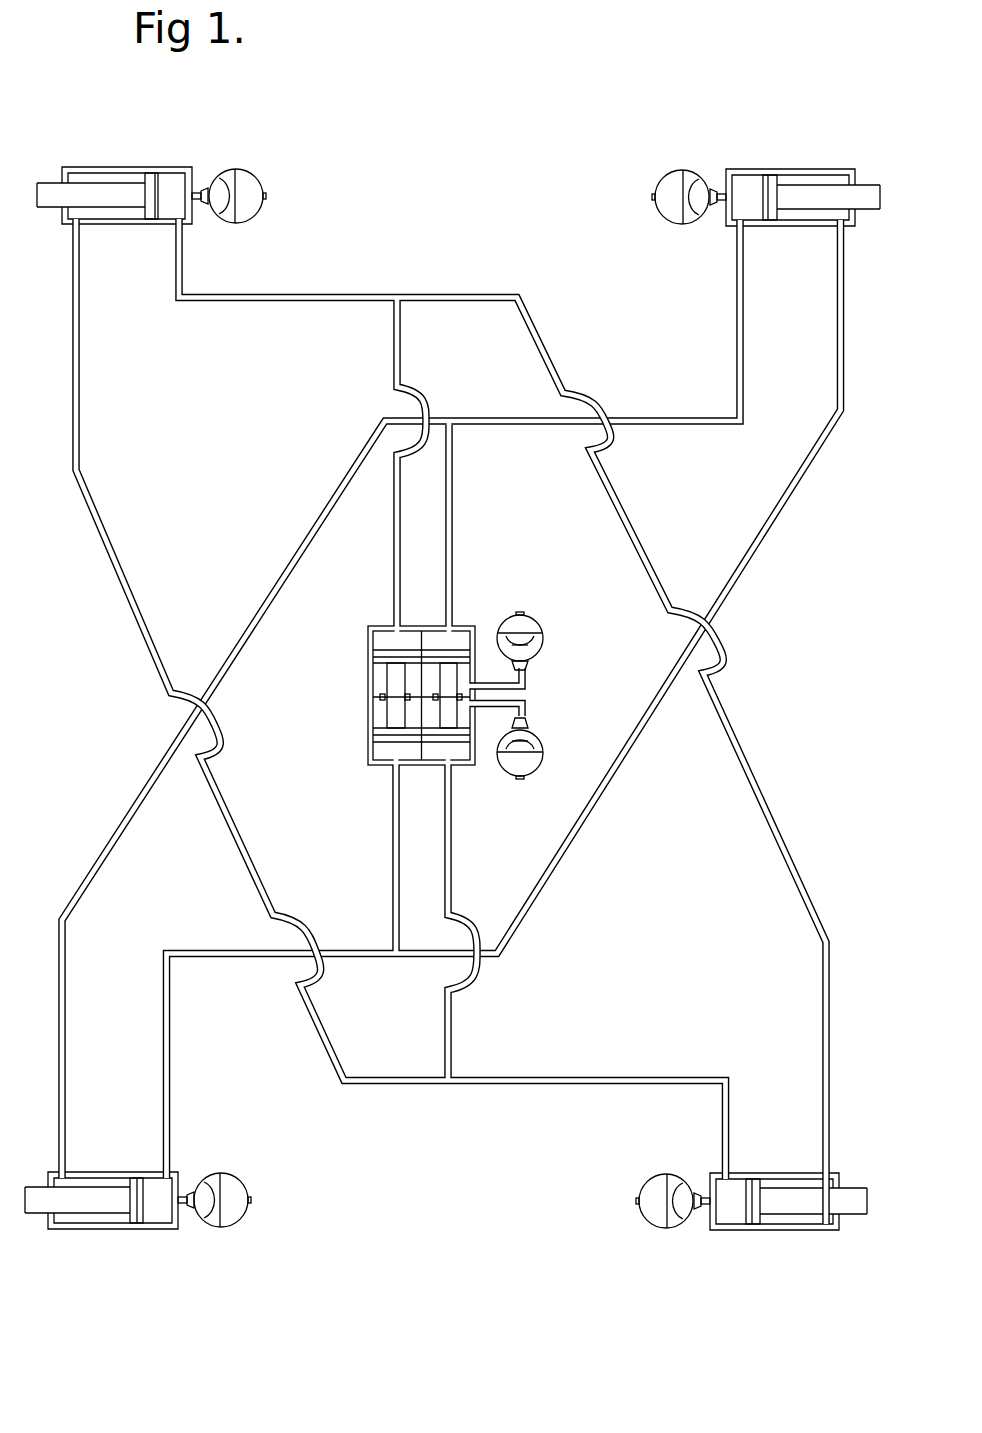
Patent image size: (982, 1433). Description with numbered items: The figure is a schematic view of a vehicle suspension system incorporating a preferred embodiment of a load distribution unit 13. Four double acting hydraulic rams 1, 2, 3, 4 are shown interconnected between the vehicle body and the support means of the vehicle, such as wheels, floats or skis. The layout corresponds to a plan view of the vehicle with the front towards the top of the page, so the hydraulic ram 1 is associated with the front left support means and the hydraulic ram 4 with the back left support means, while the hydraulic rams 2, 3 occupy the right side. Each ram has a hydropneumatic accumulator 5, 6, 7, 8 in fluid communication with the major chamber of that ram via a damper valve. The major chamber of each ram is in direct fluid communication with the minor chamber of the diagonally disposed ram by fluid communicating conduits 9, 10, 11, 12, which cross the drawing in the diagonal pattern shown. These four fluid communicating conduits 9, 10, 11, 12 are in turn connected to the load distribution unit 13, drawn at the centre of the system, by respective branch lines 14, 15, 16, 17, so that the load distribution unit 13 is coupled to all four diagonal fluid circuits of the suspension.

The hydraulic ram 1 is at (135, 167).
The hydraulic ram 2 is at (798, 169).
The hydraulic ram 3 is at (747, 1230).
The hydraulic ram 4 is at (133, 1229).
The hydropneumatic accumulator 5 is at (253, 175).
The hydropneumatic accumulator 6 is at (668, 175).
The hydropneumatic accumulator 7 is at (642, 1215).
The hydropneumatic accumulator 8 is at (248, 1190).
The fluid communicating conduit 9 is at (332, 292).
The fluid communicating conduit 10 is at (733, 357).
The fluid communicating conduit 11 is at (550, 1085).
The fluid communicating conduit 12 is at (170, 1043).
The load distribution unit 13 is at (368, 698).
The branch line 14 is at (394, 598).
The branch line 15 is at (453, 540).
The branch line 16 is at (452, 878).
The branch line 17 is at (390, 858).